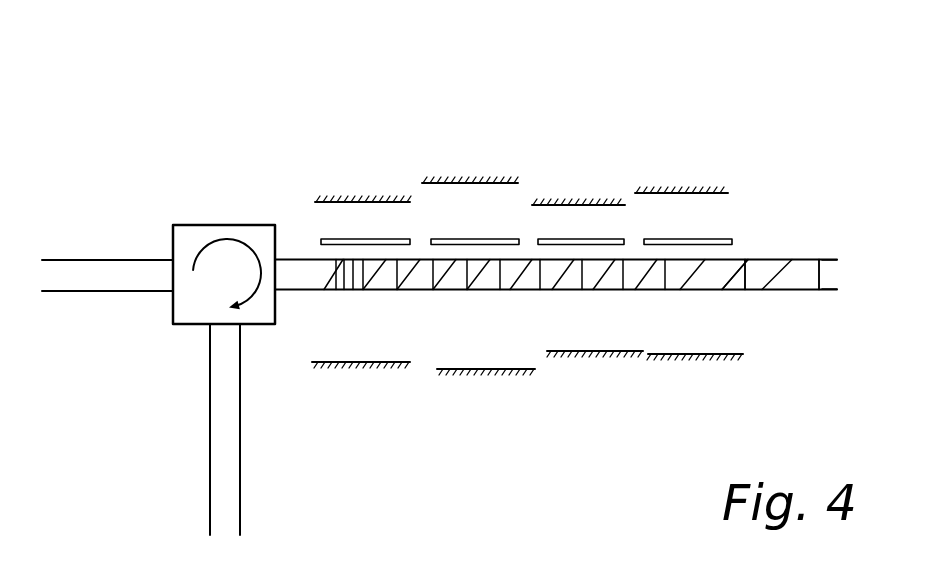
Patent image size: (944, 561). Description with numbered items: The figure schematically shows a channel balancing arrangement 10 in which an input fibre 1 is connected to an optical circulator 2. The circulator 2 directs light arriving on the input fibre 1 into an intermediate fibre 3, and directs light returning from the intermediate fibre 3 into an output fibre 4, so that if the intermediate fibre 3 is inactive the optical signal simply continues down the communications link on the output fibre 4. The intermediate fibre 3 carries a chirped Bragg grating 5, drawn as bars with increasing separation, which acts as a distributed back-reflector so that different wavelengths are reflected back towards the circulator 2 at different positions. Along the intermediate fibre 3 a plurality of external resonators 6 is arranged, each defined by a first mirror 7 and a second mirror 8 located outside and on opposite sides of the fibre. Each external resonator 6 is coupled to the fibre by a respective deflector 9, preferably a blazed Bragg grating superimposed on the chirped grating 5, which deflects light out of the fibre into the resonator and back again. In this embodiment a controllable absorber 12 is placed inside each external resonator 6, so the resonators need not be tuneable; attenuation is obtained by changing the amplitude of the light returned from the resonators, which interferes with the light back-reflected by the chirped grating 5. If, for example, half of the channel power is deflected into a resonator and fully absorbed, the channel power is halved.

The input fibre 1 is at (67, 292).
The optical circulator 2 is at (207, 225).
The intermediate fibre 3 is at (807, 289).
The output fibre 4 is at (209, 411).
The chirped Bragg grating 5 is at (822, 270).
The external resonator 6 is at (699, 338).
The first mirror 7 is at (692, 192).
The second mirror 8 is at (705, 355).
The deflector 9 is at (745, 263).
The channel balancing arrangement 10 is at (350, 82).
The controllable absorber 12 is at (703, 238).